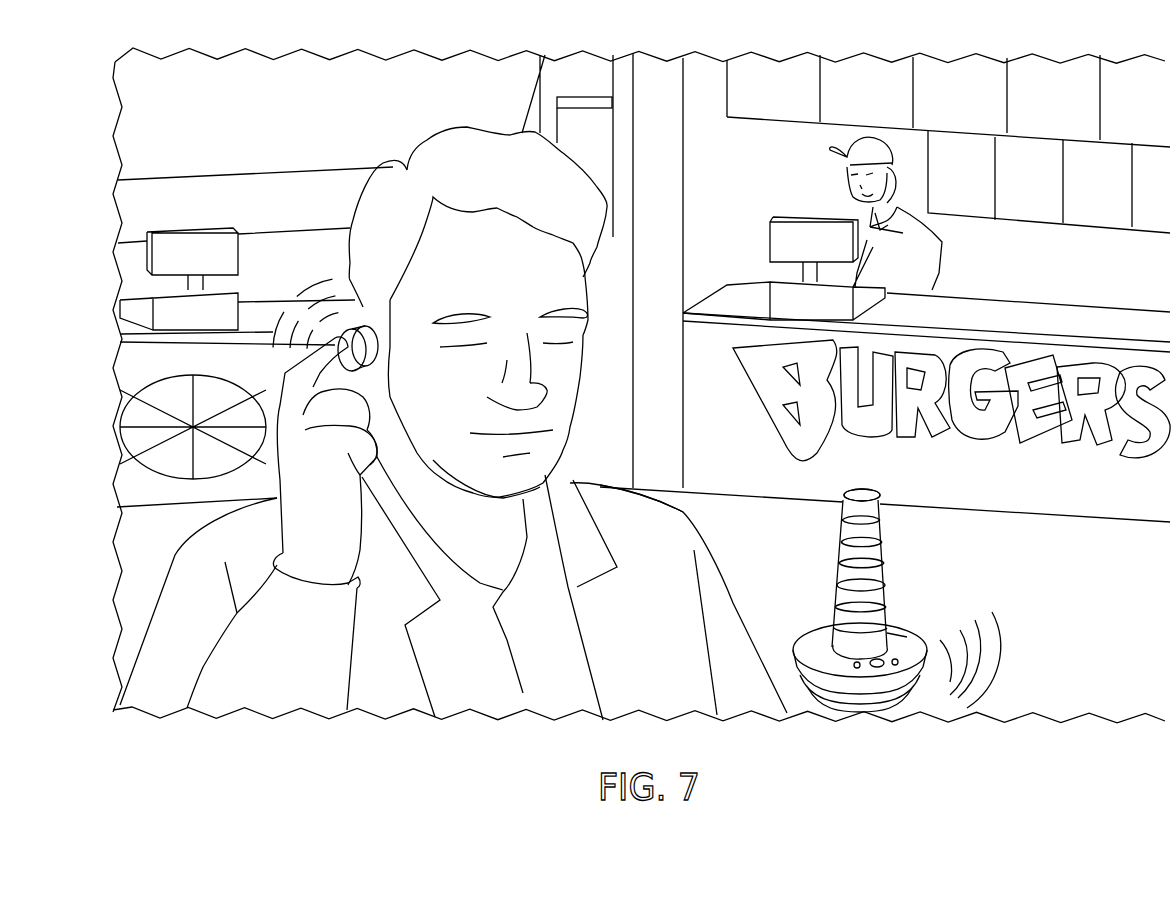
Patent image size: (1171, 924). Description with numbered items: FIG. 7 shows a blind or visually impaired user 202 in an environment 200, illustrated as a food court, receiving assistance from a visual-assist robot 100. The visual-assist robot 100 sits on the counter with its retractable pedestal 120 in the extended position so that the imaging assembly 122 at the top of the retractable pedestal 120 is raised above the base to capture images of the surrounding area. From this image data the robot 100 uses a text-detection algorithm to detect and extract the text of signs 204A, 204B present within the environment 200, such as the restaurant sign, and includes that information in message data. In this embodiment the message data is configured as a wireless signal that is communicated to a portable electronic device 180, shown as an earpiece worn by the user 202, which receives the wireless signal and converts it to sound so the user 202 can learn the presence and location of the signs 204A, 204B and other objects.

The visual-assist robot 100 is at (923, 620).
The retractable pedestal 120 is at (897, 573).
The imaging assembly 122 is at (882, 507).
The portable electronic device 180 is at (363, 320).
The environment 200 is at (1047, 677).
The user 202 is at (732, 563).
The sign 204A is at (1092, 465).
The sign 204B is at (627, 412).